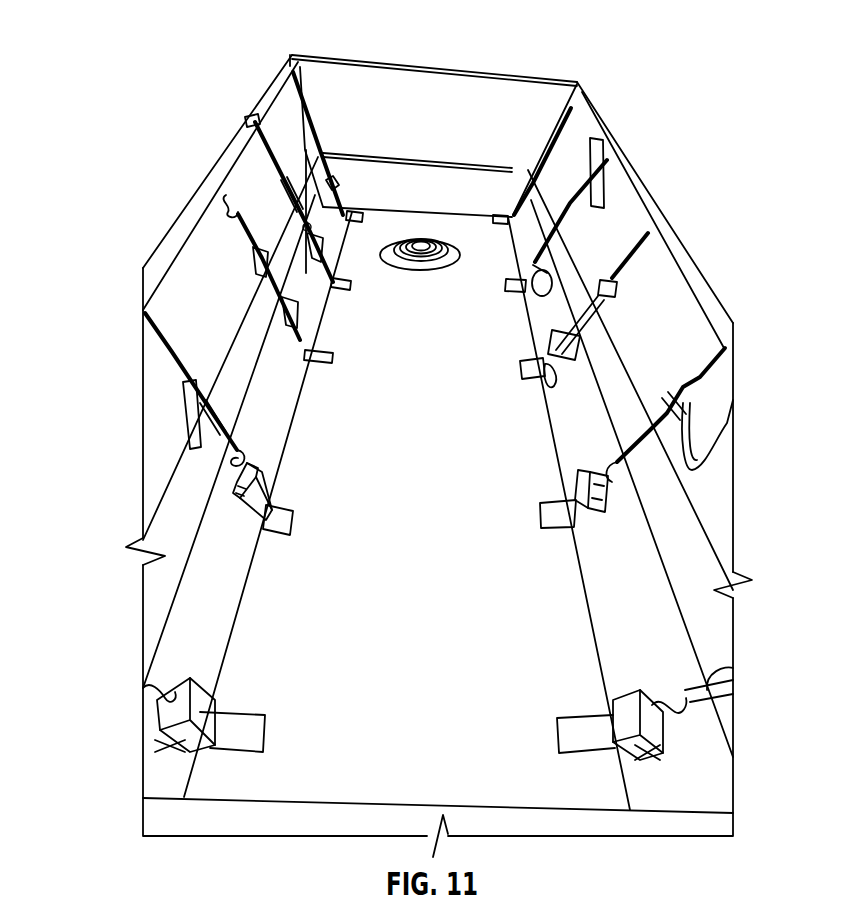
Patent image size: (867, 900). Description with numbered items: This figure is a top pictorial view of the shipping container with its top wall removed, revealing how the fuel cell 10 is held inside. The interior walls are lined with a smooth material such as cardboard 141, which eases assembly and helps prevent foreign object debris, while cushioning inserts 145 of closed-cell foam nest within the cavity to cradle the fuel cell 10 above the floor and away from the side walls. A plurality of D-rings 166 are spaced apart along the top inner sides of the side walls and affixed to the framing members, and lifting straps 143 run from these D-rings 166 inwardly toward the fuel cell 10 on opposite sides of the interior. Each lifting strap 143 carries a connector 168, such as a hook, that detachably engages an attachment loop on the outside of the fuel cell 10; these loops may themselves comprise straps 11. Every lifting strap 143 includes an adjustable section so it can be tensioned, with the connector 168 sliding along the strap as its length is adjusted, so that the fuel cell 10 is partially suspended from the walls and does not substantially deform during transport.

The fuel cell 10 is at (426, 303).
The straps 11 is at (190, 747).
The cardboard 141 is at (333, 78).
The lifting straps 143 is at (574, 223).
The cushioning inserts 145 is at (422, 200).
The D-rings 166 is at (222, 207).
The connectors 168 is at (242, 510).